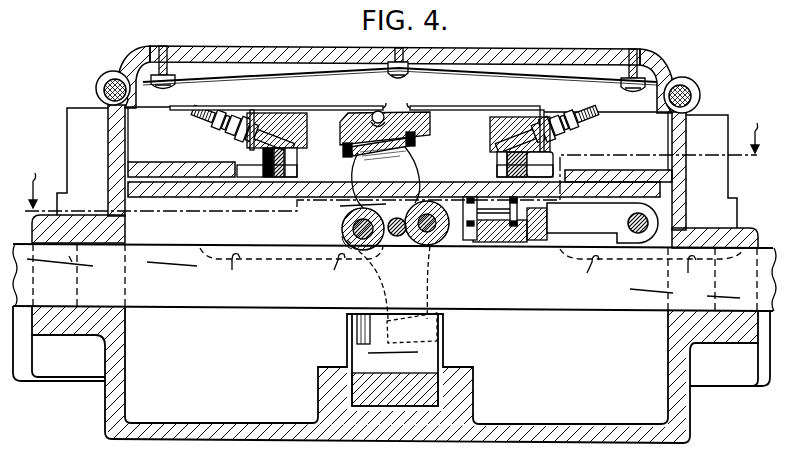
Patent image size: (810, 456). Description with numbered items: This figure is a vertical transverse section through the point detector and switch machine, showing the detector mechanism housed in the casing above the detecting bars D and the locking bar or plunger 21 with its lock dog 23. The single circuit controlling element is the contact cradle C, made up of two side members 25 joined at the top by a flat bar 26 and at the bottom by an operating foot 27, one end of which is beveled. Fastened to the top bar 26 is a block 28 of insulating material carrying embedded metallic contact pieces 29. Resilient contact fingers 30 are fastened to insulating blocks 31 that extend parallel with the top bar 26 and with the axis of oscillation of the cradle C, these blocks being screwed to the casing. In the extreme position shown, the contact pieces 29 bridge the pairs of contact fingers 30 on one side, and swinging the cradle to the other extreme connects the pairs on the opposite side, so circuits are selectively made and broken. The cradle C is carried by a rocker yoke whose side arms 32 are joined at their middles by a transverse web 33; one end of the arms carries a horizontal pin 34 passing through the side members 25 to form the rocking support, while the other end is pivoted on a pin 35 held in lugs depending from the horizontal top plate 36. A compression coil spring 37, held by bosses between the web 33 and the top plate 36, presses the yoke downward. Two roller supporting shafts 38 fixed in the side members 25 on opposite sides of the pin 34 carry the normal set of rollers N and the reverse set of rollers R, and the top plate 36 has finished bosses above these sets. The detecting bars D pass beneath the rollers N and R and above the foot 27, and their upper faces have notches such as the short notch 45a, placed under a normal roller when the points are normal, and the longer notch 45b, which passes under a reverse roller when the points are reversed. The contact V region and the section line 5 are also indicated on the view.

The section line 5- 5 is at (392, 172).
The locking bar or plunger 21 is at (370, 407).
The lock dog 23 is at (395, 360).
The side members or lugs 25 is at (395, 287).
The flat bar 26 is at (418, 139).
The operating lug or foot 27 is at (437, 328).
The block of insulating material 28 is at (430, 122).
The metallic contact pieces 29 is at (373, 112).
The resilient contact fingers 30 is at (323, 106).
The blocks of insulating material 31 is at (302, 148).
The side arms 32 is at (602, 223).
The transverse web 33 is at (509, 243).
The horizontal pin 34 is at (396, 237).
The pin 35 is at (638, 233).
The horizontal top plate 36 is at (267, 197).
The compression coil spring 37 is at (527, 223).
The roller supporting shafts 38 is at (362, 208).
The short notch 45a is at (471, 269).
The longer notch 45b is at (456, 273).
The contact cradle C is at (397, 170).
The detecting bars D is at (168, 293).
The normal set of rollers N is at (342, 232).
The reverse set of rollers R is at (404, 210).
The contact V is at (561, 238).